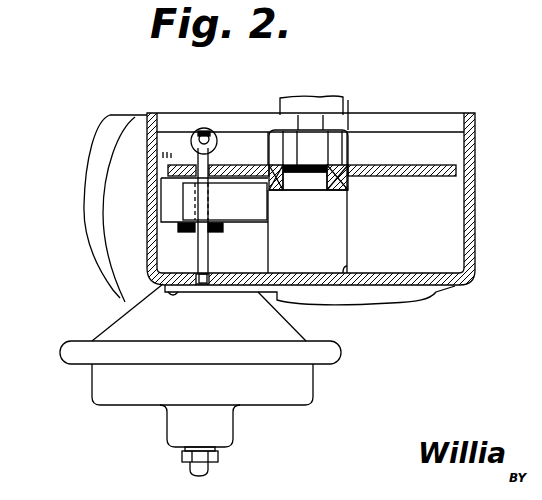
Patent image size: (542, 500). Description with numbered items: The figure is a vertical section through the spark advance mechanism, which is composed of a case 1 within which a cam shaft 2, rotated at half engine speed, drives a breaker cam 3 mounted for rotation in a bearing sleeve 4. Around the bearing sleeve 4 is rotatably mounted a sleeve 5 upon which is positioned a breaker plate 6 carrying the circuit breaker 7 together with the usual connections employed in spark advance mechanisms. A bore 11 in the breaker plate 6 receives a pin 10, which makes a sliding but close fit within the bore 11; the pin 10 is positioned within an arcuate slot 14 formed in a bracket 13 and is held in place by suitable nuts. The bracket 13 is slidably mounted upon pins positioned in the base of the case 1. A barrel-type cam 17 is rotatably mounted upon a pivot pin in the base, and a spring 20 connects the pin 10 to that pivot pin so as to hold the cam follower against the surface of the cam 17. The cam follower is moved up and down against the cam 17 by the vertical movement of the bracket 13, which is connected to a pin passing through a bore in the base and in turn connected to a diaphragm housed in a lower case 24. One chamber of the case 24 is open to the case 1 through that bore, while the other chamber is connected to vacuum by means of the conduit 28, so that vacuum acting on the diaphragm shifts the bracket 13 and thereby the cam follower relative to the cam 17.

The case 1 is at (150, 113).
The cam shaft 2 is at (282, 108).
The breaker cam 3 is at (42, 184).
The bearing sleeve 4 is at (318, 190).
The sleeve 5 is at (345, 185).
The breaker plate 6 is at (434, 165).
The circuit breaker 7 is at (122, 183).
The pin 10 is at (209, 245).
The bore 11 is at (172, 170).
The bracket 13 is at (224, 228).
The arcuate slot 14 is at (189, 233).
The cam 17 is at (242, 209).
The spring 20 is at (213, 132).
The case 24 is at (111, 324).
The conduit 28 is at (189, 469).